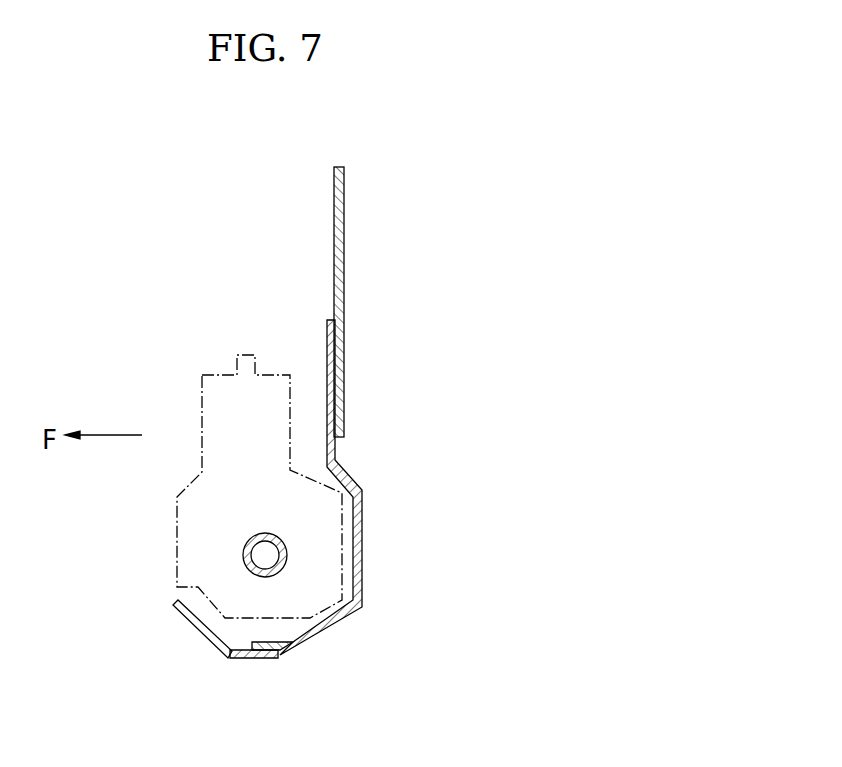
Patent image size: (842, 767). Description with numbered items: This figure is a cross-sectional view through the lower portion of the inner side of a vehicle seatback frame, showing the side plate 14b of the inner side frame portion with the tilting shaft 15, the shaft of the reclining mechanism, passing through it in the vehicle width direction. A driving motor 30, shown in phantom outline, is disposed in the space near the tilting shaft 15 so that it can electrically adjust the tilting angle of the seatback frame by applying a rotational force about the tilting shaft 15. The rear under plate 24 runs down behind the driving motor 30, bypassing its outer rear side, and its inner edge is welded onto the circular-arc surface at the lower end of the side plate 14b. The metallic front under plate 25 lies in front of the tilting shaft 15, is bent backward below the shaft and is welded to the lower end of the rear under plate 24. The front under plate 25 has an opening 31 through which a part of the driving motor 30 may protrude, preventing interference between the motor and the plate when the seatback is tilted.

The side plate 14b is at (362, 540).
The tilting shaft 15 is at (242, 545).
The rear under plate 24 is at (344, 273).
The front under plate 25 is at (247, 657).
The driving motor 30 is at (210, 372).
The opening 31 is at (175, 603).